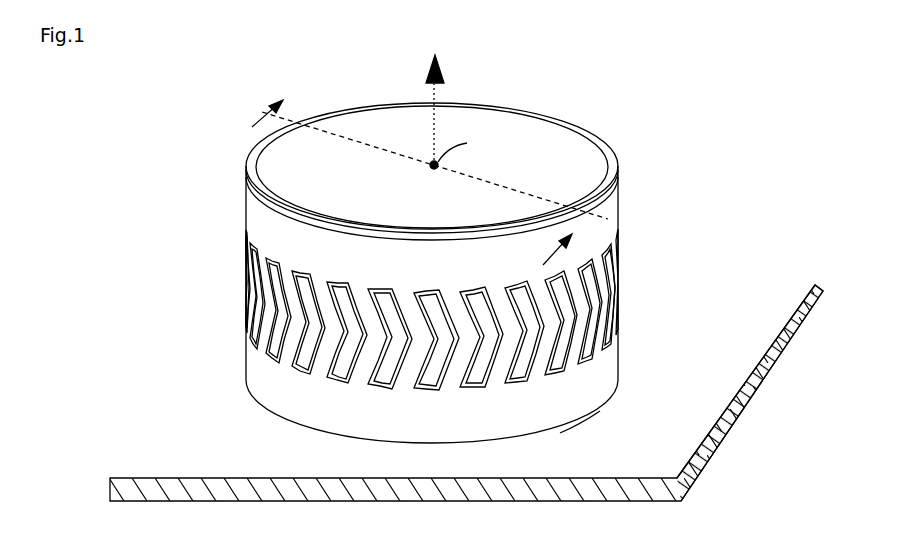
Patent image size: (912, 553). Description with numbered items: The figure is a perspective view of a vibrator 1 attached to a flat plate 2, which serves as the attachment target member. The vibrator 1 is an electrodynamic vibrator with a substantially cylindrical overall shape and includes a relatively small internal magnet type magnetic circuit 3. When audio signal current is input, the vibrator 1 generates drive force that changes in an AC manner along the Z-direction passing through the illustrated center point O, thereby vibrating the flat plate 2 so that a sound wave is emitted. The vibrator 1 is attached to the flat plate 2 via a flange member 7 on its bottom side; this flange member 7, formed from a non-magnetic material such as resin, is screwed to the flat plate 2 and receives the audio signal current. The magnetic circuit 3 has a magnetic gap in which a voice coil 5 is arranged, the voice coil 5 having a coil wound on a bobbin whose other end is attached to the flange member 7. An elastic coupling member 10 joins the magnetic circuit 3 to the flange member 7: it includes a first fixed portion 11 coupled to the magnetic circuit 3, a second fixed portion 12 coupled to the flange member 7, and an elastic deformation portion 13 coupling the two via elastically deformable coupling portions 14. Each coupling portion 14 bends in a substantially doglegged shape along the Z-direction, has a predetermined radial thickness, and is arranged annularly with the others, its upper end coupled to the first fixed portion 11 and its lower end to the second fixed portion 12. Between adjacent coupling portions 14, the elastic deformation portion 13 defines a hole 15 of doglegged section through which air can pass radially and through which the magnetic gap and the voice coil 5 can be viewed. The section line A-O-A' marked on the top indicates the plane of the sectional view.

The vibrator 1 is at (210, 100).
The flat plate 2 is at (466, 393).
The internal magnet type magnetic circuit 3 is at (523, 126).
The voice coil 5 is at (352, 350).
The flange member 7 is at (600, 403).
The elastic coupling member 10 is at (110, 188).
The first fixed portion 11 is at (248, 190).
The second fixed portion 12 is at (246, 371).
The elastic deformation portion 13 is at (178, 313).
The coupling portion 14 is at (250, 275).
The hole 15 is at (248, 328).